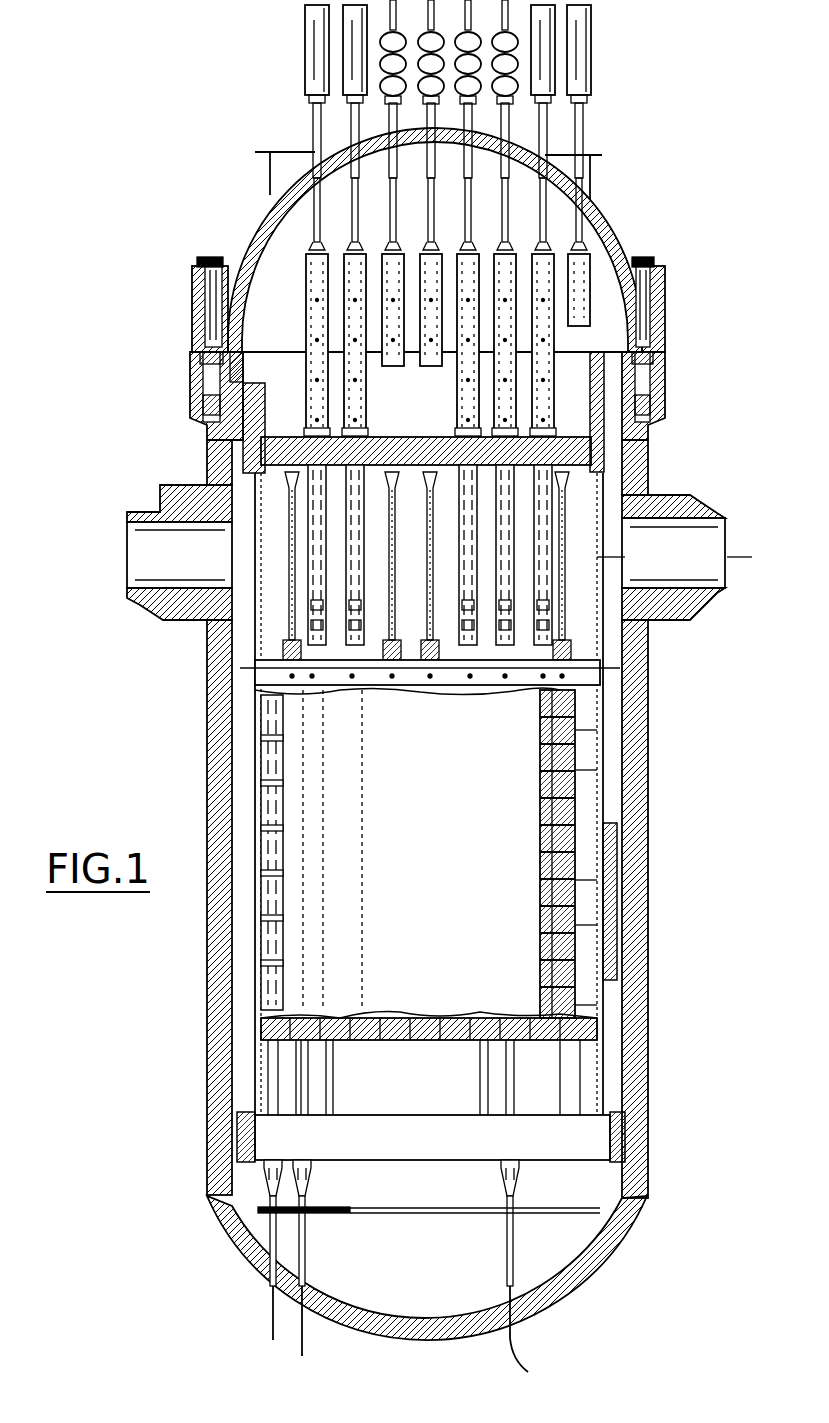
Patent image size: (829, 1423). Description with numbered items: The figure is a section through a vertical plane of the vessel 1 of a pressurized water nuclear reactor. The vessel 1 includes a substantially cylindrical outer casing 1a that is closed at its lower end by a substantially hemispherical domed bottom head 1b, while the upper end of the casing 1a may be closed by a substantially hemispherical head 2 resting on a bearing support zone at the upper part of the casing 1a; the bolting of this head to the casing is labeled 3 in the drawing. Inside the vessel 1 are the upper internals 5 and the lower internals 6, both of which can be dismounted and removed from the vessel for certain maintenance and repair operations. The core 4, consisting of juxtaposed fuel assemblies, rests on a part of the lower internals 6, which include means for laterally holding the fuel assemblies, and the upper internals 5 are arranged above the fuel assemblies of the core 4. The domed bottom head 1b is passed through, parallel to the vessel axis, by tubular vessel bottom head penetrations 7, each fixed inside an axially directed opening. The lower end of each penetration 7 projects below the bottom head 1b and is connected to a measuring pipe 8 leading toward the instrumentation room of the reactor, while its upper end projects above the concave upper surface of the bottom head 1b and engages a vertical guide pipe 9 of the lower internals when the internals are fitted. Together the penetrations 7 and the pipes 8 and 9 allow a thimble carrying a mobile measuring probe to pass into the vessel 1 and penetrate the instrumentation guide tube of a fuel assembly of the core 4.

The vessel 1 is at (439, 846).
The outer casing 1a is at (640, 905).
The domed bottom head 1b is at (592, 1253).
The head 2 is at (618, 240).
The closure flange bolts 3 is at (642, 312).
The core 4 is at (546, 822).
The upper internals 5 is at (575, 516).
The lower internals 6 is at (604, 1026).
The vessel bottom head penetrations 7 is at (300, 1270).
The measuring pipe 8 is at (270, 1318).
The vertical guide pipe 9 is at (300, 1220).